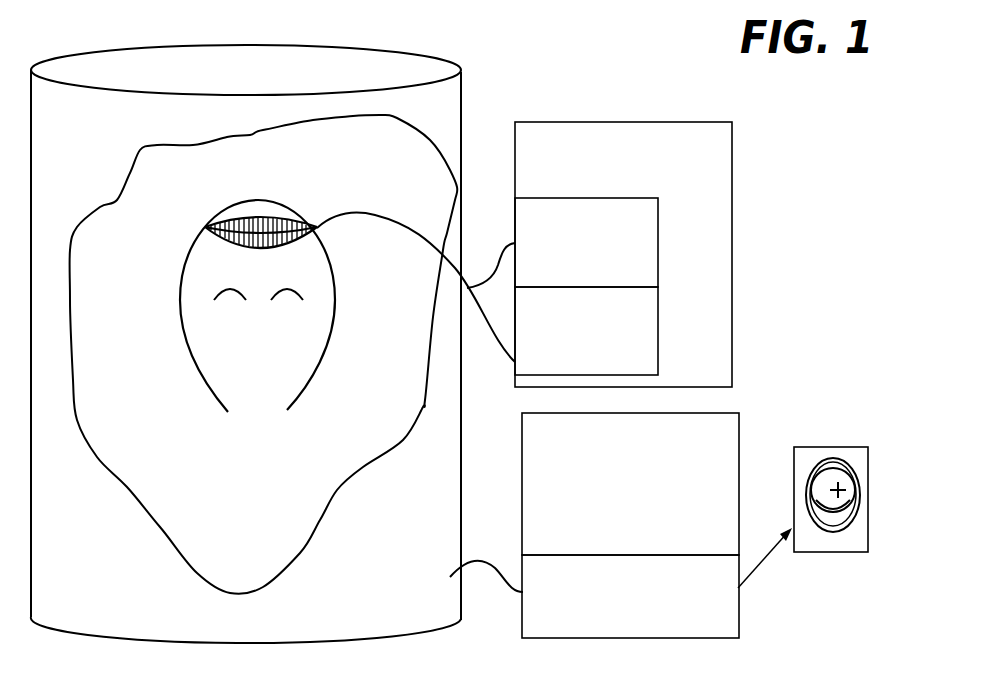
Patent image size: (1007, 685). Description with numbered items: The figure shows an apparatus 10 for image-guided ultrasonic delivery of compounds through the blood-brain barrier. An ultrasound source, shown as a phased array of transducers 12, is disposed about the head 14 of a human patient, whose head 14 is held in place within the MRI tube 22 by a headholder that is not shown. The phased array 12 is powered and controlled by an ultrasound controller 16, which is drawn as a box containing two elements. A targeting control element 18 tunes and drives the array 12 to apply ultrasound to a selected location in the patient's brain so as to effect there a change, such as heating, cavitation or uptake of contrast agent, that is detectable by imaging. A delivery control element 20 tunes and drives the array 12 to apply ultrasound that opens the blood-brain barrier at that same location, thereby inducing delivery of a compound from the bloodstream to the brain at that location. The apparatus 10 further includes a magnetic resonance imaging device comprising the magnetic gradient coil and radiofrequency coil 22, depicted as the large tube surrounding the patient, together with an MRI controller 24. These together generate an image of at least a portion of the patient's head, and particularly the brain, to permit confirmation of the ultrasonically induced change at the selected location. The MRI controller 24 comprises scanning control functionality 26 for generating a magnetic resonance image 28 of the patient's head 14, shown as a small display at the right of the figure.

The apparatus 10 is at (626, 54).
The phased array of transducers 12 is at (205, 229).
The head 14 is at (207, 353).
The ultrasound controller 16 is at (717, 148).
The targeting control element 18 is at (647, 242).
The delivery control element 20 is at (645, 352).
The magnetic gradient coil and radiofrequency coil 22 is at (452, 123).
The MRI controller 24 is at (727, 433).
The scanning control functionality 26 is at (723, 620).
The magnetic resonance image 28 is at (848, 542).